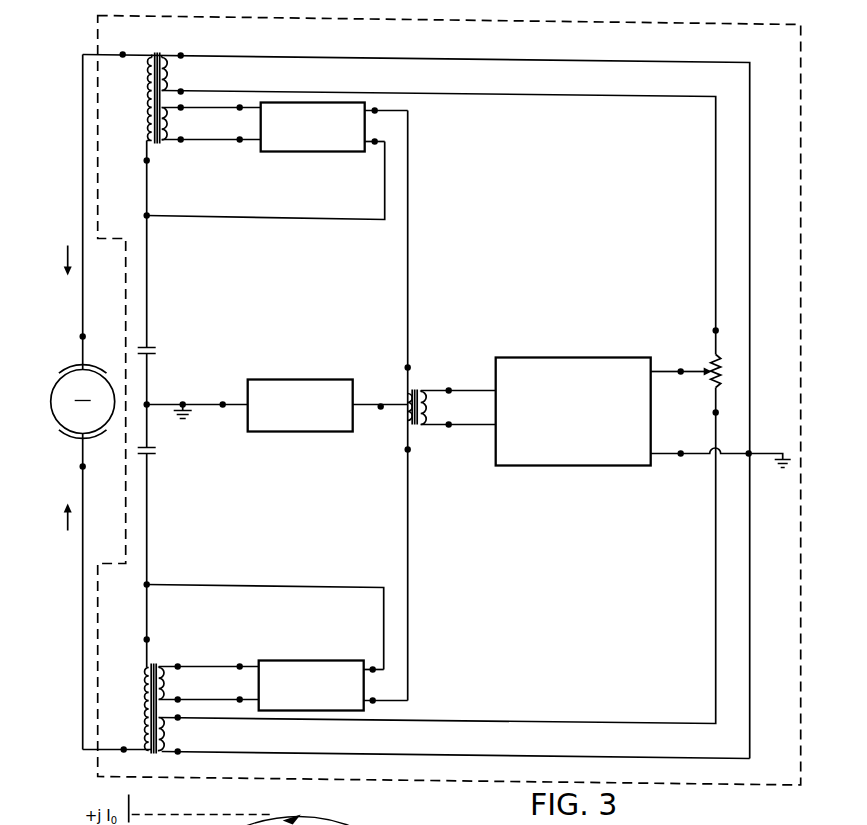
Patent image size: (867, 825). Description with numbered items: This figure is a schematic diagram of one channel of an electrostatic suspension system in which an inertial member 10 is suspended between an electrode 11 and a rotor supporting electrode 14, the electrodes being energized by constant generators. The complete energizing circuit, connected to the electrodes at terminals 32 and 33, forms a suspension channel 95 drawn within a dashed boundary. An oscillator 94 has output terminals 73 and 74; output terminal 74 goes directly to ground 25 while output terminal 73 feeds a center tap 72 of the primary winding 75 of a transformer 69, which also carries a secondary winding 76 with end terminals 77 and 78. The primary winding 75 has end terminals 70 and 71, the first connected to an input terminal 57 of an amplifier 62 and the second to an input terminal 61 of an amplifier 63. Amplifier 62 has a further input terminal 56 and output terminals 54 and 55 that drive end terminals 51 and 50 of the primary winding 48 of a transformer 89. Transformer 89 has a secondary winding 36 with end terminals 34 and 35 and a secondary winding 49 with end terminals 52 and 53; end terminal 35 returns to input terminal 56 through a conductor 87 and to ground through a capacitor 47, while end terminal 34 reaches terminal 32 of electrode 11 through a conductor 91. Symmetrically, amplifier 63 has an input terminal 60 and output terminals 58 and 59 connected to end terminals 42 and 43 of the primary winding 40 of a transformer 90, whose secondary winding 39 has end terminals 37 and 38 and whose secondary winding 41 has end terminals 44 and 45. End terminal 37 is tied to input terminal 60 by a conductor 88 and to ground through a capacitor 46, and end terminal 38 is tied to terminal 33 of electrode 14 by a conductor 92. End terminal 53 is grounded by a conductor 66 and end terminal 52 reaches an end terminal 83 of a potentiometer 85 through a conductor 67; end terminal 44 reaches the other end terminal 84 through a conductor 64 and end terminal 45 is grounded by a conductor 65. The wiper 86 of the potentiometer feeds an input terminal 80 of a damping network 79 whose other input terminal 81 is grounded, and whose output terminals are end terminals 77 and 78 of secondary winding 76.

The inertial member 10 is at (83, 402).
The electrode 11 is at (95, 365).
The rotor supporting electrode 14 is at (95, 435).
The ground 25 is at (185, 414).
The terminal 32 is at (82, 334).
The terminal 33 is at (82, 464).
The end terminal 34 is at (122, 52).
The end terminal 35 is at (146, 158).
The secondary winding 36 is at (146, 96).
The end terminal 37 is at (146, 637).
The end terminal 38 is at (123, 747).
The secondary winding 39 is at (142, 690).
The primary winding 40 is at (164, 680).
The secondary winding 41 is at (163, 734).
The end terminal 42 is at (177, 664).
The end terminal 43 is at (177, 697).
The end terminal 44 is at (177, 715).
The end terminal 45 is at (177, 749).
The capacitor 46 is at (152, 451).
The capacitor 47 is at (150, 346).
The primary winding 48 is at (163, 122).
The secondary winding 49 is at (170, 72).
The end terminal 50 is at (180, 137).
The end terminal 51 is at (180, 105).
The end terminal 52 is at (180, 89).
The end terminal 53 is at (180, 52).
The output terminal 54 is at (239, 105).
The output terminal 55 is at (239, 137).
The input terminal 56 is at (374, 139).
The input terminal 57 is at (374, 108).
The output terminal 58 is at (239, 664).
The output terminal 59 is at (239, 697).
The input terminal 60 is at (372, 667).
The input terminal 61 is at (372, 698).
The amplifier 62 is at (303, 149).
The amplifier 63 is at (300, 658).
The conductor 64 is at (606, 720).
The conductor 65 is at (500, 753).
The conductor 66 is at (335, 53).
The conductor 67 is at (495, 92).
The transformer 69 is at (415, 399).
The end terminal 70 is at (407, 365).
The end terminal 71 is at (407, 447).
The center tap 72 is at (406, 415).
The output terminal 73 is at (380, 404).
The output terminal 74 is at (222, 402).
The primary winding 75 is at (406, 392).
The secondary winding 76 is at (426, 405).
The end terminal 77 is at (448, 388).
The end terminal 78 is at (448, 422).
The damping network 79 is at (565, 463).
The input terminal 80 is at (680, 369).
The input terminal 81 is at (680, 451).
The end terminal 83 is at (715, 328).
The end terminal 84 is at (715, 410).
The potentiometer 85 is at (719, 359).
The wiper 86 is at (708, 369).
The conductor 87 is at (325, 217).
The conductor 88 is at (300, 585).
The transformer 89 is at (158, 88).
The transformer 90 is at (149, 697).
The conductor 91 is at (82, 166).
The conductor 92 is at (82, 571).
The oscillator 94 is at (297, 377).
The suspension channel 95 is at (538, 199).